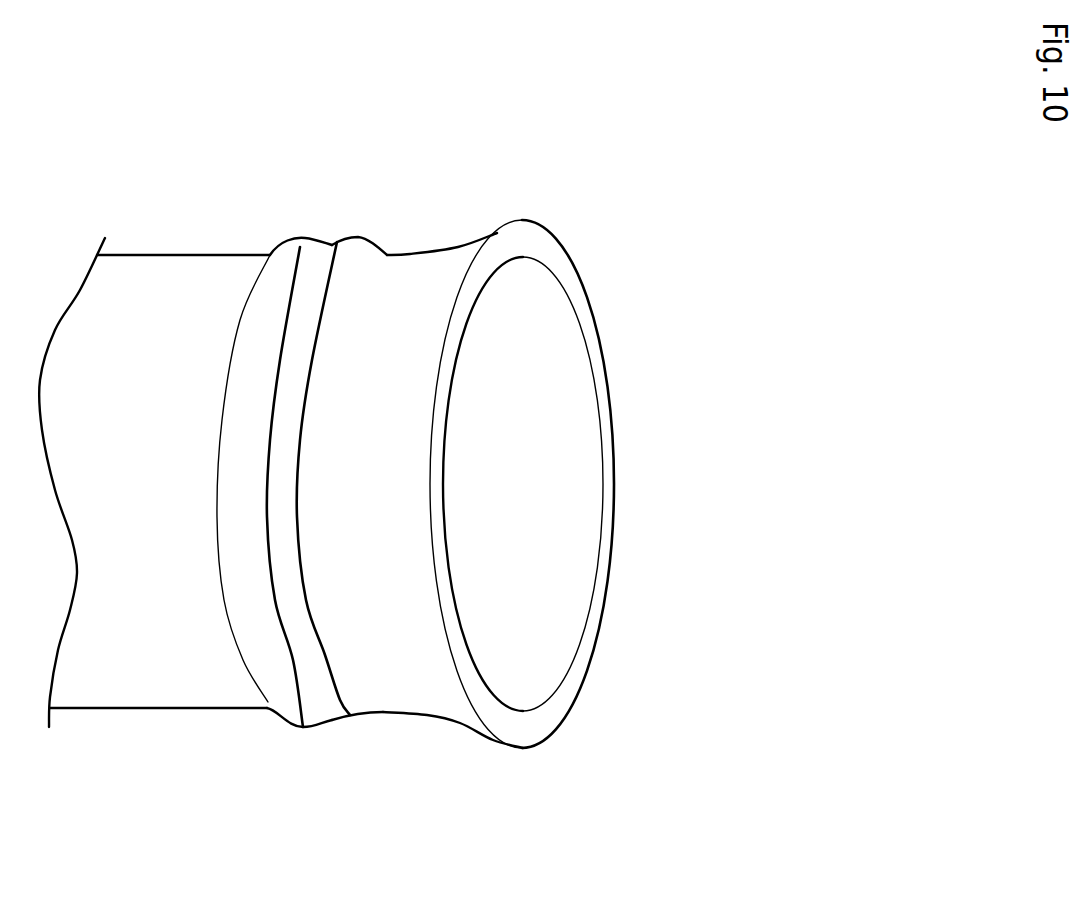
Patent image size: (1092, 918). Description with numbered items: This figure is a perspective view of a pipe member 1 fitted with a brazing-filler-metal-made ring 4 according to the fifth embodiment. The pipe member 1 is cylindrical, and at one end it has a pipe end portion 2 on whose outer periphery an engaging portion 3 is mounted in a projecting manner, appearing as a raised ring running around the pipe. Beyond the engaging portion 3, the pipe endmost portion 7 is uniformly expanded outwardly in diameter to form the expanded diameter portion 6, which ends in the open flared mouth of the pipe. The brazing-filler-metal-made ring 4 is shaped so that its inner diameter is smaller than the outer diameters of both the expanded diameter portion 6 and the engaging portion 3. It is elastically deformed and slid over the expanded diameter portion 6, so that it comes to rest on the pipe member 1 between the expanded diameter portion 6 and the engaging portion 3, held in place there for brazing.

The pipe member 1 is at (168, 255).
The pipe end portion 2 is at (412, 253).
The engaging portion 3 is at (300, 248).
The brazing-filler-metal-made ring 4 is at (348, 711).
The expanded diameter portion 6 is at (460, 253).
The pipe endmost portion 7 is at (527, 240).